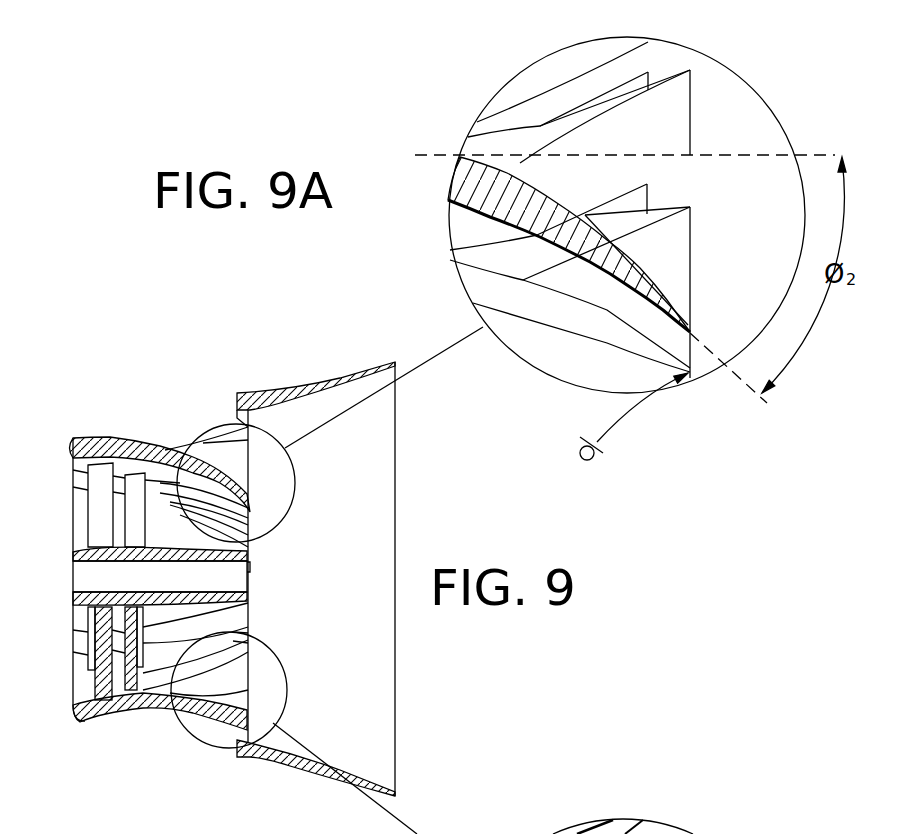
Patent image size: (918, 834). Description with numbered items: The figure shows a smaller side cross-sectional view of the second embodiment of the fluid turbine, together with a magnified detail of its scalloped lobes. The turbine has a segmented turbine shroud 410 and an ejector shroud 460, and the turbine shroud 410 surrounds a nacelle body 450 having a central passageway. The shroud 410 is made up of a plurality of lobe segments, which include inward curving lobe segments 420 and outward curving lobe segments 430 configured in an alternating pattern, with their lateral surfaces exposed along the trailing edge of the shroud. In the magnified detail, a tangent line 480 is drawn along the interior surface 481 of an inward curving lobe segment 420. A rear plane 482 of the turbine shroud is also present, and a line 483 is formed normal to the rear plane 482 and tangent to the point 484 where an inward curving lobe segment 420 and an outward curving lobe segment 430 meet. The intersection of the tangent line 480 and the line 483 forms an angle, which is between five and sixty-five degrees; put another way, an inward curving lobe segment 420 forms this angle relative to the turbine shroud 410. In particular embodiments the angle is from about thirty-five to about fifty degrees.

In FIG. 9, the segmented turbine shroud 410 is at (122, 447).
In FIG. 9A, the inward curving lobe segment 420 is at (450, 200).
In FIG. 9A, the outward curving lobe segment 430 is at (660, 90).
In FIG. 9, the nacelle body 450 is at (73, 550).
In FIG. 9, the ejector shroud 460 is at (288, 393).
In FIG. 9A, the tangent line 480 is at (737, 382).
In FIG. 9A, the interior surface 481 is at (620, 292).
In FIG. 9A, the rear plane 482 is at (690, 267).
In FIG. 9A, the line normal to rear plane 483 is at (812, 155).
In FIG. 9A, the meeting point 484 is at (463, 147).